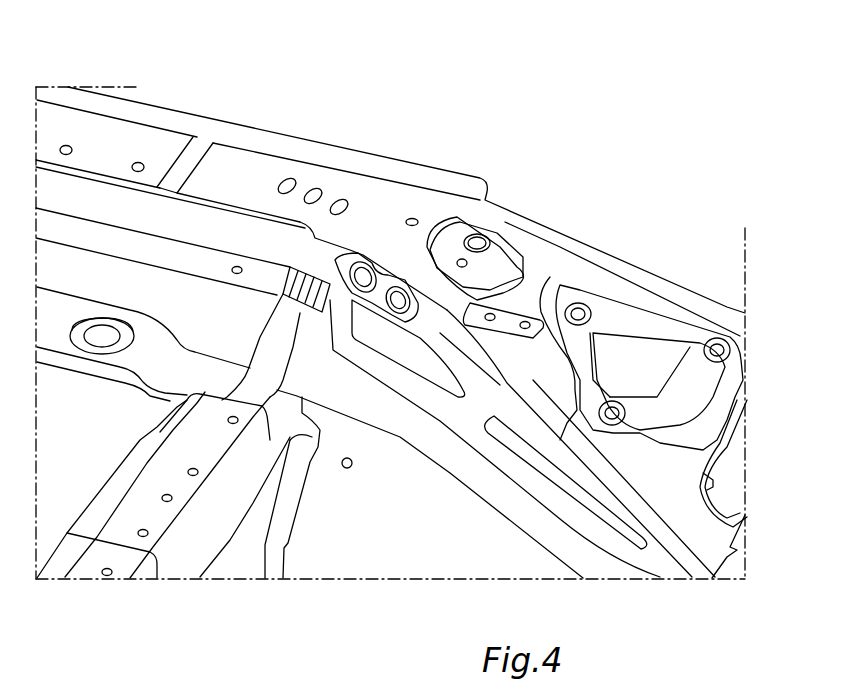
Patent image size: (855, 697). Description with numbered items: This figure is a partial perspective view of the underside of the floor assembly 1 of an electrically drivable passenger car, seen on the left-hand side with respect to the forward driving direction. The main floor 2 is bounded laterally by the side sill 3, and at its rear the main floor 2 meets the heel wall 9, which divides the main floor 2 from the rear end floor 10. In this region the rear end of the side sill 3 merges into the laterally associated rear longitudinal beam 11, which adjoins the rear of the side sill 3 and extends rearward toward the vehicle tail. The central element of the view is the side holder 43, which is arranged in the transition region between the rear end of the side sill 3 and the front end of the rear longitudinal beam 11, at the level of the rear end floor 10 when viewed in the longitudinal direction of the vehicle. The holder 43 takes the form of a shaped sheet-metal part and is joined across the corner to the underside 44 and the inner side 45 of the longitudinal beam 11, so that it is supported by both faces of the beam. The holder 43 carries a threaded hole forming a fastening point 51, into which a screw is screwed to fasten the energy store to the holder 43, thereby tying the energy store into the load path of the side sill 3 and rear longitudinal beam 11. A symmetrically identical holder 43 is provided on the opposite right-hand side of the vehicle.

The floor assembly 1 is at (182, 77).
The main floor 2 is at (118, 279).
The side sill 3 is at (357, 192).
The heel wall 9 is at (168, 500).
The rear end floor 10 is at (466, 443).
The rear longitudinal beam 11 is at (602, 508).
The side holder 43 is at (547, 264).
The underside of the longitudinal beam 44 is at (437, 285).
The inner side of the longitudinal beam 45 is at (426, 358).
The threaded hole / fastening point 51 is at (527, 323).